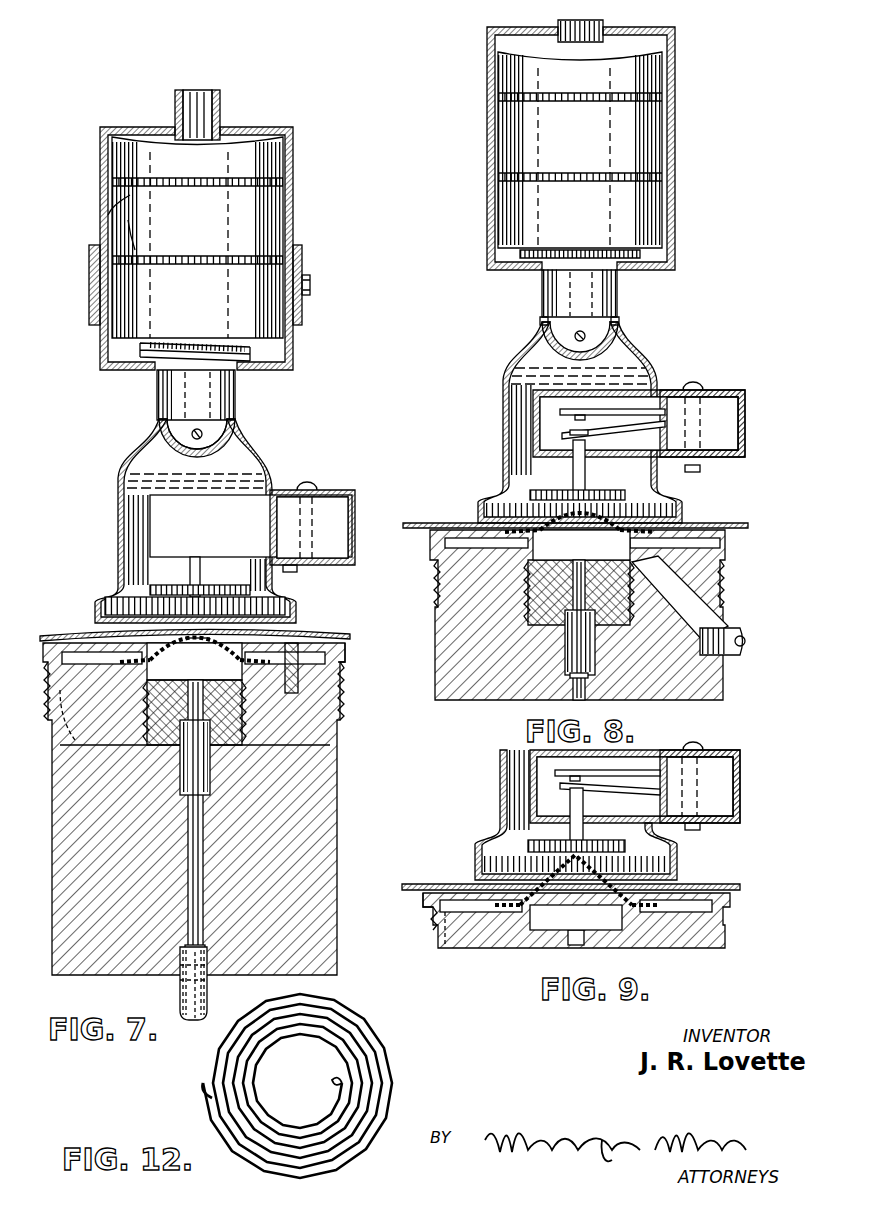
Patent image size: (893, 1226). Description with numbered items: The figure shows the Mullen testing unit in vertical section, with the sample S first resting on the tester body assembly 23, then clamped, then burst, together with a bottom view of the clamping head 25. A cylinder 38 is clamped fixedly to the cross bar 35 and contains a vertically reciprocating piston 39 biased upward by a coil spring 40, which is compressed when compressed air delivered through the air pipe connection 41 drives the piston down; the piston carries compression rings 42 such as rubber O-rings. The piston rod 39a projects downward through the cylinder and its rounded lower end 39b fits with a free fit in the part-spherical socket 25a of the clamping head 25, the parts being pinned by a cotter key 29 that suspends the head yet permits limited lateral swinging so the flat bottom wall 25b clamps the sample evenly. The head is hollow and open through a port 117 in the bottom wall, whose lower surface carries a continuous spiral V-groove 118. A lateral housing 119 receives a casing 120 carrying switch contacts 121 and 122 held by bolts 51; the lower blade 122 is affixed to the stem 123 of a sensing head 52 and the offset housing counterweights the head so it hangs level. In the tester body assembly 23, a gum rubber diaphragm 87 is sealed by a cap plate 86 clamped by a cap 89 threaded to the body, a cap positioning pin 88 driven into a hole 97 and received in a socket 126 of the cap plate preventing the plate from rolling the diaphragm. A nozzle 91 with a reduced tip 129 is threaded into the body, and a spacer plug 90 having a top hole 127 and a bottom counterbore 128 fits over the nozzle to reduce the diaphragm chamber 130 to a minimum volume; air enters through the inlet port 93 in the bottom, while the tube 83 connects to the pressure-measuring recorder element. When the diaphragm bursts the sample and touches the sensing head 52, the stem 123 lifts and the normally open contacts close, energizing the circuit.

In FIG. 7, the tester body assembly 23 is at (325, 790).
In FIG. 8, the tester body assembly 23 is at (577, 615).
In FIG. 9, the tester body assembly 23 is at (456, 949).
In FIG. 7, the clamping head 25 is at (118, 497).
In FIG. 8, the clamping head 25 is at (508, 385).
In FIG. 9, the clamping head 25 is at (576, 815).
In FIG. 7, the part-spherical socket 25a is at (186, 462).
In FIG. 7, the bottom wall 25b is at (260, 607).
In FIG. 12, the bottom wall 25b is at (378, 1042).
In FIG. 7, the pin or cotter key 29 is at (193, 430).
In FIG. 7, the cross bar 35 is at (89, 285).
In FIG. 7, the cylinder 38 is at (294, 170).
In FIG. 8, the cylinder 38 is at (487, 112).
In FIG. 7, the piston 39 is at (265, 240).
In FIG. 8, the piston 39 is at (655, 130).
In FIG. 7, the piston rod 39a is at (165, 390).
In FIG. 8, the piston rod 39a is at (548, 300).
In FIG. 7, the rounded lower end 39b is at (214, 440).
In FIG. 7, the coil spring 40 is at (245, 365).
In FIG. 8, the coil spring 40 is at (648, 271).
In FIG. 7, the air pipe connection 41 is at (222, 105).
In FIG. 7, the compression rings 42 is at (135, 250).
In FIG. 8, the bolts 51 is at (694, 473).
In FIG. 9, the bolts 51 is at (690, 831).
In FIG. 7, the sensing head 52 is at (203, 575).
In FIG. 8, the sensing head 52 is at (540, 491).
In FIG. 9, the sensing head 52 is at (620, 845).
In FIG. 8, the tube 83 is at (735, 632).
In FIG. 7, the cap plate 86 is at (52, 700).
In FIG. 9, the cap plate 86 is at (460, 942).
In FIG. 7, the distendable diaphragm 87 is at (190, 641).
In FIG. 8, the distendable diaphragm 87 is at (560, 530).
In FIG. 9, the distendable diaphragm 87 is at (580, 877).
In FIG. 7, the cap positioning pin 88 is at (338, 700).
In FIG. 7, the cap 89 is at (345, 668).
In FIG. 9, the cap 89 is at (426, 912).
In FIG. 7, the spacer plug 90 is at (232, 720).
In FIG. 8, the spacer plug 90 is at (578, 535).
In FIG. 7, the nozzle 91 is at (205, 745).
In FIG. 8, the nozzle 91 is at (605, 660).
In FIG. 7, the air inlet port 93 is at (179, 980).
In FIG. 7, the hole 97 is at (300, 700).
In FIG. 7, the port 117 is at (175, 587).
In FIG. 12, the port 117 is at (343, 1080).
In FIG. 12, the spiral V-groove 118 is at (215, 1095).
In FIG. 7, the lateral housing 119 is at (328, 492).
In FIG. 8, the lateral housing 119 is at (746, 384).
In FIG. 9, the lateral housing 119 is at (734, 760).
In FIG. 8, the casing 120 is at (610, 395).
In FIG. 9, the casing 120 is at (668, 748).
In FIG. 8, the contact 121 is at (618, 414).
In FIG. 9, the contact 121 is at (555, 773).
In FIG. 8, the lower contact blade 122 is at (635, 440).
In FIG. 9, the lower contact blade 122 is at (630, 794).
In FIG. 8, the stem 123 is at (573, 467).
In FIG. 9, the stem 123 is at (570, 830).
In FIG. 7, the socket 126 is at (295, 648).
In FIG. 7, the hole 127 is at (204, 640).
In FIG. 8, the hole 127 is at (600, 534).
In FIG. 7, the counterbore 128 is at (145, 738).
In FIG. 7, the reduced tip 129 is at (235, 690).
In FIG. 7, the diaphragm chamber 130 is at (194, 661).
In FIG. 9, the diaphragm chamber 130 is at (576, 917).
In FIG. 7, the sample S is at (55, 632).
In FIG. 8, the sample S is at (430, 522).
In FIG. 9, the sample S is at (425, 883).